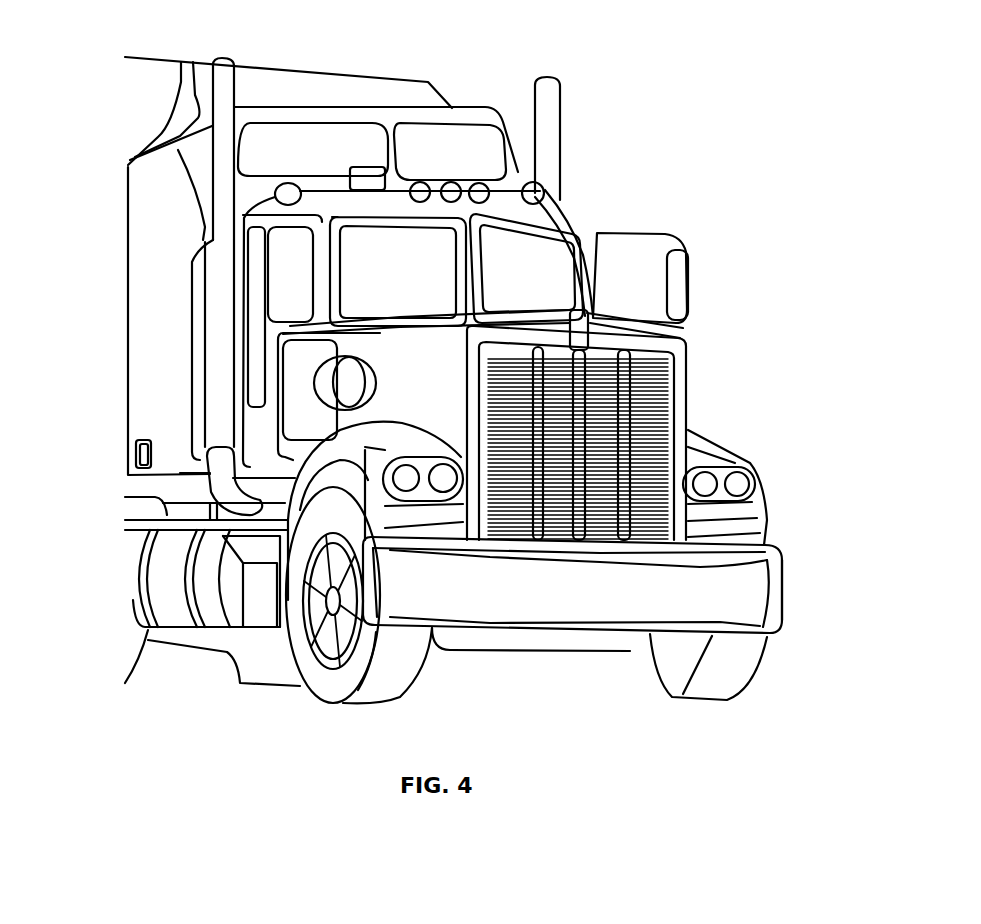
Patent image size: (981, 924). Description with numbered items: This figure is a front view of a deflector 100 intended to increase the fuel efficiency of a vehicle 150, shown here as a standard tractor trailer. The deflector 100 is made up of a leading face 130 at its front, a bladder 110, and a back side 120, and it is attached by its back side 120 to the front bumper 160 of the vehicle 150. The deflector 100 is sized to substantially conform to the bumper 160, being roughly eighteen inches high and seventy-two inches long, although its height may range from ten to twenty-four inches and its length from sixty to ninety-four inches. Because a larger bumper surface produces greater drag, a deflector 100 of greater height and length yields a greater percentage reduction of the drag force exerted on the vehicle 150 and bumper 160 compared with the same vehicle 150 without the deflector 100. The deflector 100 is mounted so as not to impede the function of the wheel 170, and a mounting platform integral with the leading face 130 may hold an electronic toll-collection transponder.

The deflector 100 is at (622, 624).
The bladder 110 is at (693, 560).
The back side 120 is at (772, 575).
The leading face 130 is at (612, 609).
The vehicle 150 is at (560, 217).
The bumper 160 is at (780, 590).
The wheel 170 is at (330, 680).